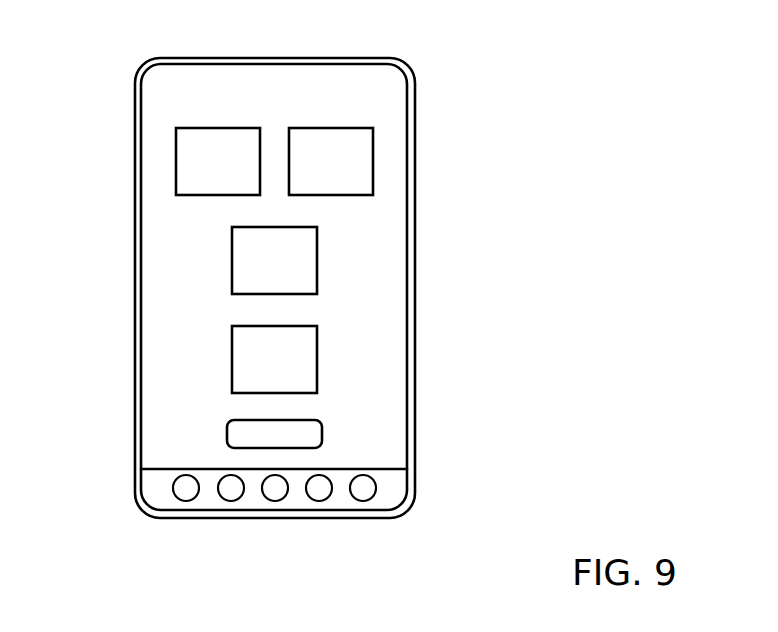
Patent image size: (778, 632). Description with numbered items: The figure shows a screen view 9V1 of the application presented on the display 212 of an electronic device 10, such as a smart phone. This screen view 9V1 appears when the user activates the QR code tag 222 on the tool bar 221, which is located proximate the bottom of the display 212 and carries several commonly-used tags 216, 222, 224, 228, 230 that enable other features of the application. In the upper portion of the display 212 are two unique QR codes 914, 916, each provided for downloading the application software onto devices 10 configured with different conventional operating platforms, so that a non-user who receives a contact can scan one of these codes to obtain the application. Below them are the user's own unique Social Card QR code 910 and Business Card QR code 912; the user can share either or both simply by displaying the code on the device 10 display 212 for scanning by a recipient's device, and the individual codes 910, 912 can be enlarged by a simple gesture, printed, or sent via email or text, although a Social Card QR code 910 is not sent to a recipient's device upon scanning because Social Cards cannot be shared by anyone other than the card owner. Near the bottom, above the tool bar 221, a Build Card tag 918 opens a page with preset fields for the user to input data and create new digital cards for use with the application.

The electronic device 10 is at (206, 57).
The display 212 is at (155, 96).
The tool bar 221 is at (152, 483).
The QR code 914 is at (186, 167).
The QR code 916 is at (370, 177).
The Social Card QR code 910 is at (303, 262).
The Business Card QR code 912 is at (300, 355).
The Build Card tag 918 is at (226, 433).
The tag 216 is at (165, 512).
The QR code tag 222 is at (231, 490).
The tag 224 is at (272, 485).
The tag 228 is at (322, 488).
The tag 230 is at (363, 488).
The screen view 9V1 is at (430, 143).